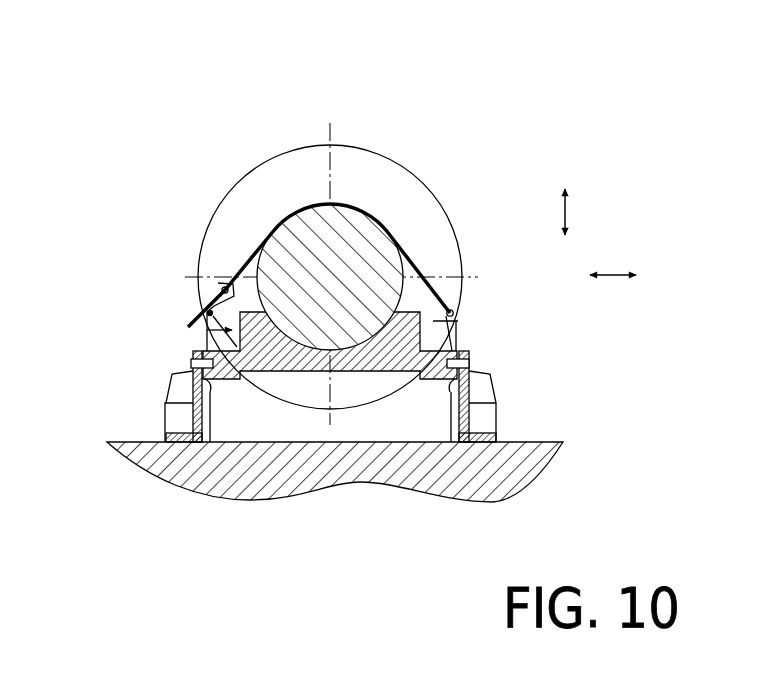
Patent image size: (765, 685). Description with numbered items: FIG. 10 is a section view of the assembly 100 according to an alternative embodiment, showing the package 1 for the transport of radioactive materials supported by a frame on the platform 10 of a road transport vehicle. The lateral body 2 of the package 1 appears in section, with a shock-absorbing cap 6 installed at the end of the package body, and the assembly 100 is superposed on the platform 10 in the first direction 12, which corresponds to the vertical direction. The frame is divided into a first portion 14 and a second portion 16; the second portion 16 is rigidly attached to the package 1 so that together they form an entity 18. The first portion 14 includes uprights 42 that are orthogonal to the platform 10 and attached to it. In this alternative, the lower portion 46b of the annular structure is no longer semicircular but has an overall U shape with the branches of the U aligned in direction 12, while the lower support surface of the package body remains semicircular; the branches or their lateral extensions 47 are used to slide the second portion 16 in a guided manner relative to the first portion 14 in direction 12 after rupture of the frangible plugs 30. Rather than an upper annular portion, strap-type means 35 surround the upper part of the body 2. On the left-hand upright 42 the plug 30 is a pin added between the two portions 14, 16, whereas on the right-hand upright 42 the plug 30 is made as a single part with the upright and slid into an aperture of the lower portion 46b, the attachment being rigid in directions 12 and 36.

The assembly 100 is at (262, 97).
The package 1 is at (256, 159).
The lateral body 2 is at (353, 220).
The shock-absorbing cap 6 is at (396, 191).
The entity 18 is at (278, 215).
The strap 35 is at (423, 267).
The lower portion 46b is at (462, 322).
The second portion 16 is at (188, 326).
The frangible plug 30 is at (198, 355).
The lateral extension 47 is at (192, 366).
The upright 42 is at (178, 420).
The first portion 14 is at (181, 451).
The platform 10 is at (107, 442).
The first direction 12 is at (568, 213).
The direction 36 is at (612, 277).